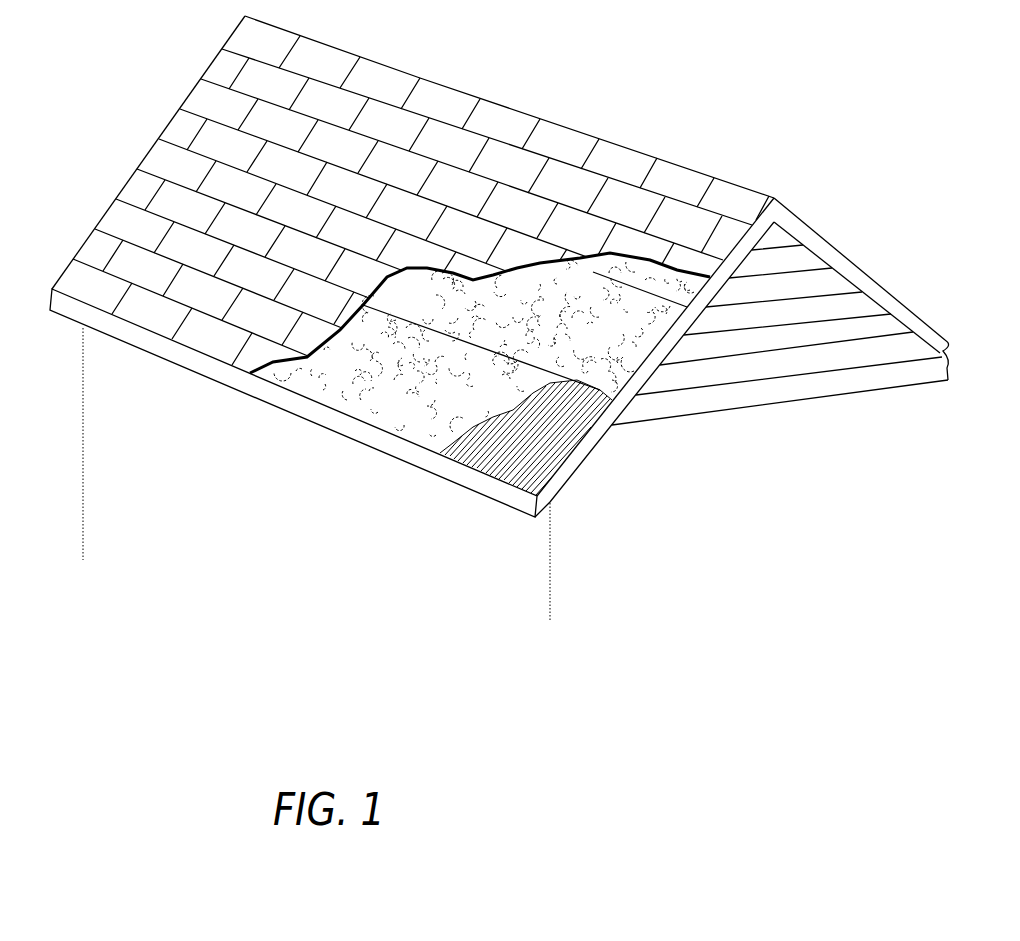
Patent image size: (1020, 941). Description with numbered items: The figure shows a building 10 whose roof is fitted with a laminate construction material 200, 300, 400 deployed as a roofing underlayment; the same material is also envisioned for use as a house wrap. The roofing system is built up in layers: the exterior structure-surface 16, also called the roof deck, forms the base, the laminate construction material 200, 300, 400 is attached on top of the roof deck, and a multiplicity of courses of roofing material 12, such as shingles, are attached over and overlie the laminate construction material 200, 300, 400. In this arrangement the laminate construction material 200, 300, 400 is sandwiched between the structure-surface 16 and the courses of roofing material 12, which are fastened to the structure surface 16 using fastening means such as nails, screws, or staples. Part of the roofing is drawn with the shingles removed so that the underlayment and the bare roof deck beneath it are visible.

The building 10 is at (703, 132).
The courses of roofing material 12 is at (510, 106).
The exterior structure-surface 16 is at (558, 460).
The laminate construction material 200 is at (480, 401).
The laminate construction material 300 is at (480, 401).
The laminate construction material 400 is at (372, 420).